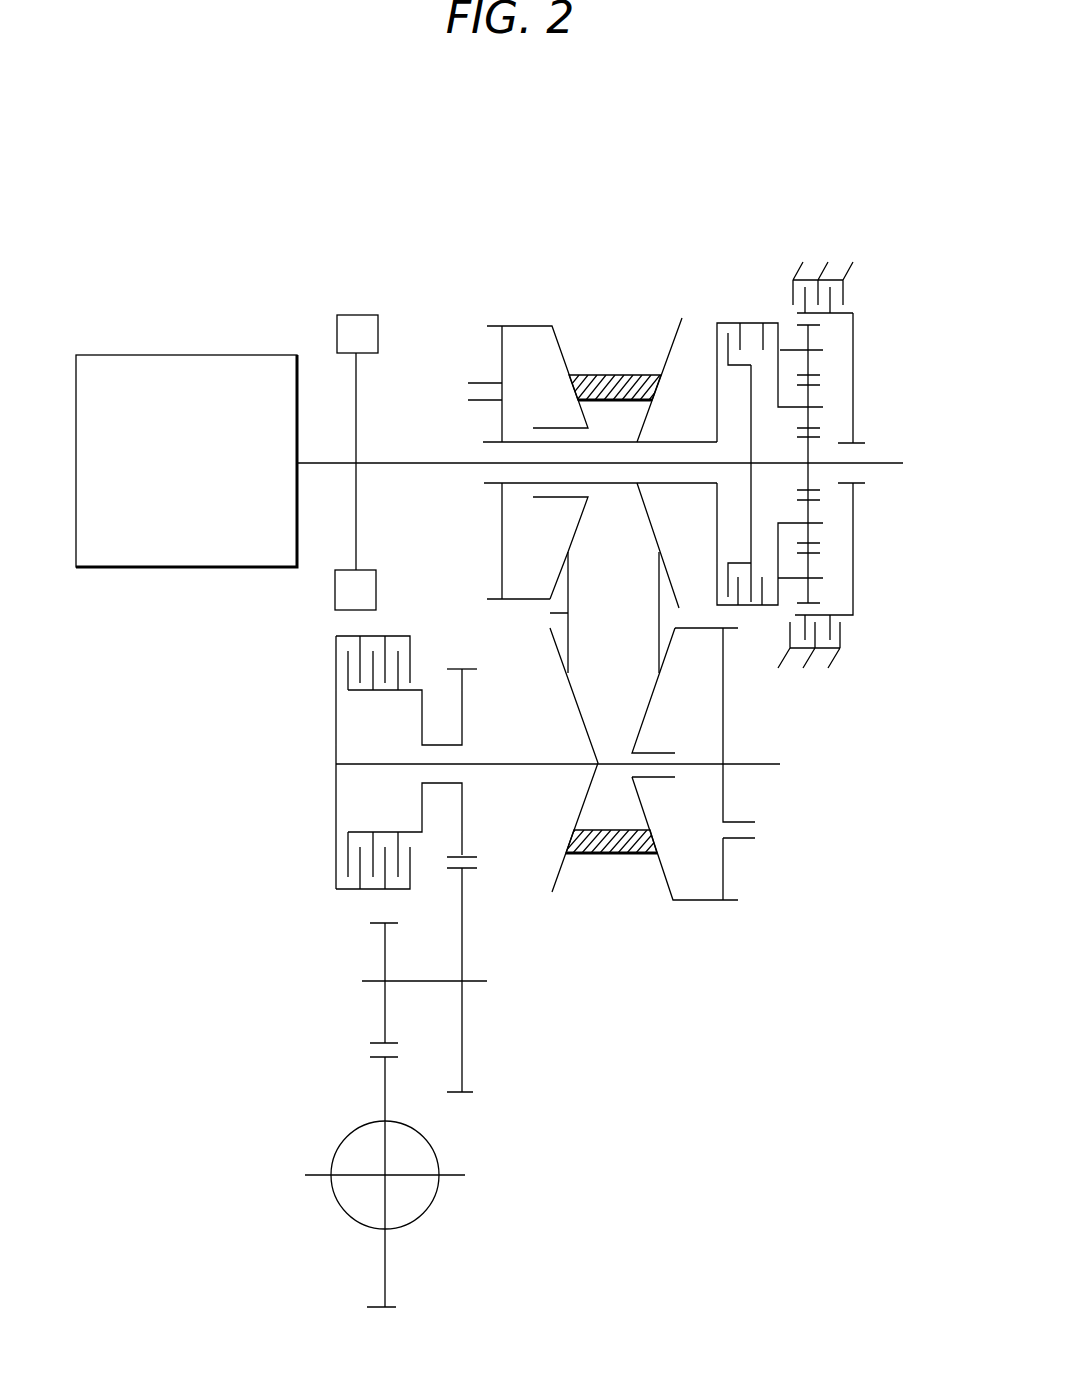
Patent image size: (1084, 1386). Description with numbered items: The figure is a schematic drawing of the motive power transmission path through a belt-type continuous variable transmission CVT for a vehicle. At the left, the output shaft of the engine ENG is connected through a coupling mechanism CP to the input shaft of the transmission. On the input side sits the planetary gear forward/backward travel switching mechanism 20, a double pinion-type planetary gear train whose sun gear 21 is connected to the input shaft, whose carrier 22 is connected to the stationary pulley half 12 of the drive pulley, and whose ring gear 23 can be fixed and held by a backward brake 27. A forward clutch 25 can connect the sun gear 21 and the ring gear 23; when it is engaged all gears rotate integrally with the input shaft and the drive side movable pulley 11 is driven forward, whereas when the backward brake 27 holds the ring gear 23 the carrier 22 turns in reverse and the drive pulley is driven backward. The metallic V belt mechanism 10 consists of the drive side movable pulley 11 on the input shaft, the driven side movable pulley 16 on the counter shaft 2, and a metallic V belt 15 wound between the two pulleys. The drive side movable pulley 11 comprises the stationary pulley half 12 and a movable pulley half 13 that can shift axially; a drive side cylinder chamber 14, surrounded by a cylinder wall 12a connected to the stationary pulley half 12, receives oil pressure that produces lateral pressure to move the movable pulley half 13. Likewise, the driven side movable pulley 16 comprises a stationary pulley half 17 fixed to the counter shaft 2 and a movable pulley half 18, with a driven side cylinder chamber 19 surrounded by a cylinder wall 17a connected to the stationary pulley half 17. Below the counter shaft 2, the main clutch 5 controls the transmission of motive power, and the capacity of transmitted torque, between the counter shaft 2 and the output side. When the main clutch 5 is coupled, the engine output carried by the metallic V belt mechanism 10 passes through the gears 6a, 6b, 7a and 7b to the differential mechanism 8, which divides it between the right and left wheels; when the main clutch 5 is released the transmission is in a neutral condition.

The engine ENG is at (212, 470).
The coupling mechanism CP is at (347, 312).
The belt-type continuous variable transmission CVT is at (683, 157).
The metallic V belt mechanism 10 is at (575, 233).
The drive side movable pulley 11 is at (522, 315).
The stationary pulley half 12 is at (667, 323).
The cylinder wall 12a is at (500, 418).
The movable pulley half 13 is at (573, 330).
The drive side cylinder chamber 14 is at (522, 405).
The metallic V belt 15 is at (548, 613).
The driven side movable pulley 16 is at (687, 815).
The stationary pulley half 17 is at (548, 893).
The cylinder wall 17a is at (723, 730).
The movable pulley half 18 is at (665, 885).
The driven side cylinder chamber 19 is at (667, 724).
The planetary gear forward/backward travel switching mechanism 20 is at (881, 421).
The sun gear 21 is at (808, 447).
The carrier 22 is at (780, 368).
The ring gear 23 is at (843, 316).
The forward clutch 25 is at (738, 322).
The backward brake 27 is at (843, 293).
The counter shaft 2 is at (520, 765).
The main clutch 5 is at (328, 857).
The gear 6a is at (462, 690).
The gear 6b is at (472, 1093).
The gear 7a is at (380, 945).
The gear 7b is at (383, 1085).
The differential mechanism 8 is at (427, 1210).